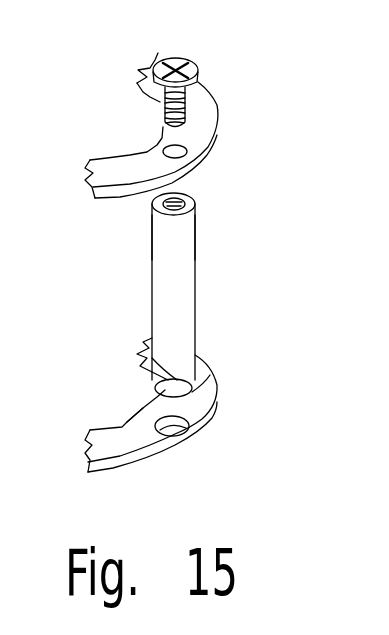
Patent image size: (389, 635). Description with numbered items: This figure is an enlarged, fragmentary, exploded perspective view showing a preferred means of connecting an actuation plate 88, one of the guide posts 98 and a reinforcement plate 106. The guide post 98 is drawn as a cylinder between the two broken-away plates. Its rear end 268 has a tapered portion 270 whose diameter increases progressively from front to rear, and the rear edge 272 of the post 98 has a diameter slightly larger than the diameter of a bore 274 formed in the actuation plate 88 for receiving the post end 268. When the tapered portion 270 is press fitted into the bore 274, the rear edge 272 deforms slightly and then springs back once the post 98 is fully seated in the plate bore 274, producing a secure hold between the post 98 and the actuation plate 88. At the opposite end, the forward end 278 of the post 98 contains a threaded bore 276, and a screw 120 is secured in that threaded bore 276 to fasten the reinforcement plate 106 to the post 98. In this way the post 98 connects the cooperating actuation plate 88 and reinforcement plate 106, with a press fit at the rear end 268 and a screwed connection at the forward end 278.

The screw 120 is at (183, 62).
The reinforcement plate 106 is at (195, 140).
The threaded bore 276 is at (187, 197).
The forward end 278 is at (165, 230).
The guide post 98 is at (178, 257).
The rear end 268 is at (168, 337).
The tapered portion 270 is at (148, 350).
The actuation plate 88 is at (198, 402).
The bore 274 is at (190, 427).
The rear edge 272 is at (127, 422).